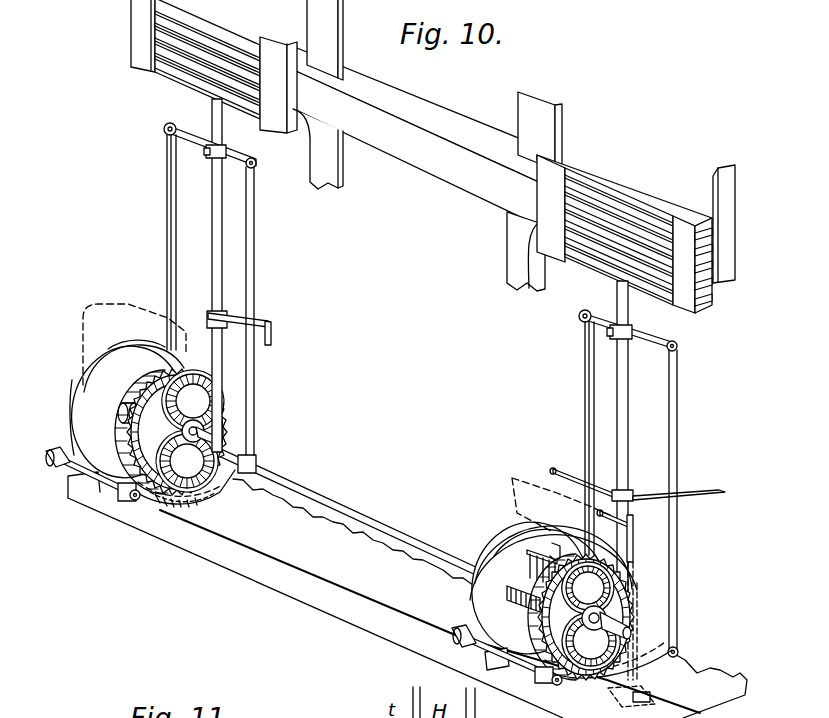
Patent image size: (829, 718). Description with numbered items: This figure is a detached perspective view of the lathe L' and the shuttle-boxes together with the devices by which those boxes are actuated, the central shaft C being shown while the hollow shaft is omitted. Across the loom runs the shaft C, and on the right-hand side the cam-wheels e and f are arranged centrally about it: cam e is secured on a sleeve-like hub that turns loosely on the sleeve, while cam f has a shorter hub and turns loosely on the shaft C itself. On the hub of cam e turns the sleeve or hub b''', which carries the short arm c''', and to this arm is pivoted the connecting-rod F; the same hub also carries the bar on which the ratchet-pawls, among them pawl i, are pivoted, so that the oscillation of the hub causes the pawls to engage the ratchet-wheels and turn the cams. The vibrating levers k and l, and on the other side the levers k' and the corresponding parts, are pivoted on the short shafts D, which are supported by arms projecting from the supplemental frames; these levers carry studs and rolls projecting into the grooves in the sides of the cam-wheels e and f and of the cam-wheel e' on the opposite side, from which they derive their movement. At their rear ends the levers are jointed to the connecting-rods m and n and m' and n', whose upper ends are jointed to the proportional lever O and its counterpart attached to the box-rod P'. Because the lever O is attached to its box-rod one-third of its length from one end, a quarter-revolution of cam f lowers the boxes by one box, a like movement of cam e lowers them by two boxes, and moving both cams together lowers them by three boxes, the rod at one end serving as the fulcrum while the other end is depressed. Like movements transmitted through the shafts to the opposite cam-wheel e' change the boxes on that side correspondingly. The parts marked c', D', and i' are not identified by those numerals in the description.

The lathe L' is at (421, 139).
The proportional lever O is at (212, 112).
The box-rod P' is at (415, 349).
The connecting-rod m' is at (155, 242).
The connecting-rod n' is at (258, 311).
The connecting-rod m is at (576, 438).
The connecting-rod n is at (678, 503).
The cam-wheel e' is at (127, 411).
The cam-wheel e is at (529, 588).
The cam-wheel f is at (171, 432).
The shaft C is at (632, 624).
The connecting-rod F is at (507, 533).
The connecting arm c' is at (637, 574).
The short arm c''' is at (534, 564).
The sleeve or hub b''' is at (513, 599).
The vibrating lever k' is at (74, 472).
The vibrating lever k is at (492, 649).
The bearing block D' is at (86, 485).
The short shaft D is at (497, 664).
The ratchet-pawl i is at (126, 500).
The bearing i' is at (237, 484).
The vibrating lever l is at (554, 691).